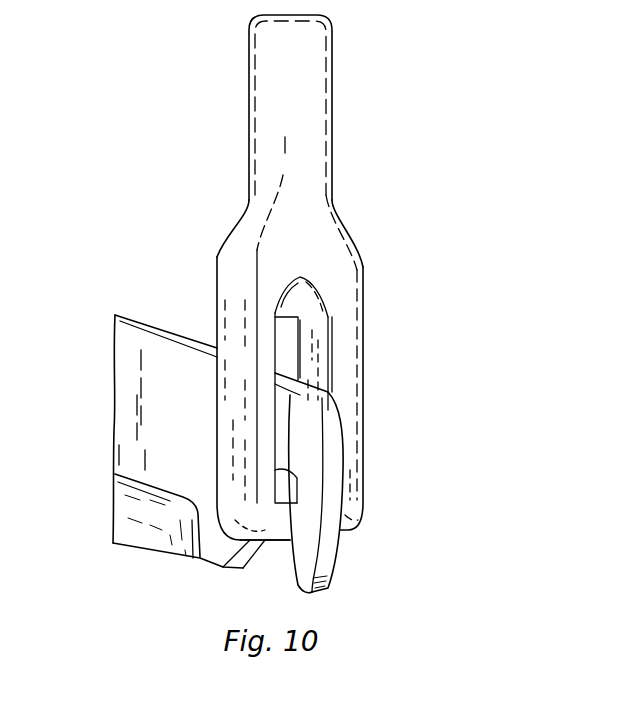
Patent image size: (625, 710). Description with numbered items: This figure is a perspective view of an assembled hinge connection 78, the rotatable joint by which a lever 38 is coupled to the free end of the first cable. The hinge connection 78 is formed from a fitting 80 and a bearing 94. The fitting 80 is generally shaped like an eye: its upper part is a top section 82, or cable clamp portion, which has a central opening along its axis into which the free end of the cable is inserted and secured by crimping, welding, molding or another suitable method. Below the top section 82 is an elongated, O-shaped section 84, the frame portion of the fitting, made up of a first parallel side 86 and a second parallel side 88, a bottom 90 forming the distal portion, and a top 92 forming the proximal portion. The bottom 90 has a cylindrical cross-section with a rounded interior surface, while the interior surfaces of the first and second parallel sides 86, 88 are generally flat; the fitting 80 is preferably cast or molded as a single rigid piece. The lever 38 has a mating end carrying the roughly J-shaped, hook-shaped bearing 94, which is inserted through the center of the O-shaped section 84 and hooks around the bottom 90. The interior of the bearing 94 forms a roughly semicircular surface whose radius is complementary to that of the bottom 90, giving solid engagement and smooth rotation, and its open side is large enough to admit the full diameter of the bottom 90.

The lever 38 is at (130, 375).
The hinge connection 78 is at (375, 312).
The fitting 80 is at (365, 47).
The top section 82 is at (248, 96).
The elongated, O-shaped section 84 is at (363, 398).
The first parallel side 86 is at (234, 460).
The second parallel side 88 is at (353, 481).
The bottom 90 is at (277, 545).
The top 92 is at (303, 283).
The bearing 94 is at (338, 563).